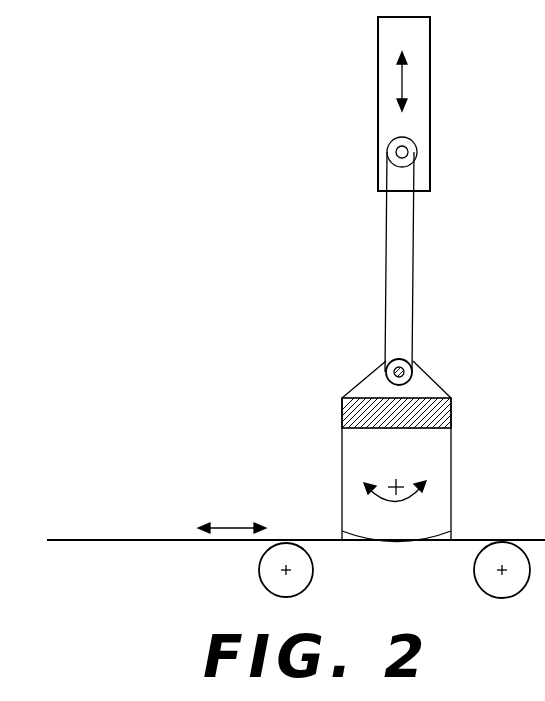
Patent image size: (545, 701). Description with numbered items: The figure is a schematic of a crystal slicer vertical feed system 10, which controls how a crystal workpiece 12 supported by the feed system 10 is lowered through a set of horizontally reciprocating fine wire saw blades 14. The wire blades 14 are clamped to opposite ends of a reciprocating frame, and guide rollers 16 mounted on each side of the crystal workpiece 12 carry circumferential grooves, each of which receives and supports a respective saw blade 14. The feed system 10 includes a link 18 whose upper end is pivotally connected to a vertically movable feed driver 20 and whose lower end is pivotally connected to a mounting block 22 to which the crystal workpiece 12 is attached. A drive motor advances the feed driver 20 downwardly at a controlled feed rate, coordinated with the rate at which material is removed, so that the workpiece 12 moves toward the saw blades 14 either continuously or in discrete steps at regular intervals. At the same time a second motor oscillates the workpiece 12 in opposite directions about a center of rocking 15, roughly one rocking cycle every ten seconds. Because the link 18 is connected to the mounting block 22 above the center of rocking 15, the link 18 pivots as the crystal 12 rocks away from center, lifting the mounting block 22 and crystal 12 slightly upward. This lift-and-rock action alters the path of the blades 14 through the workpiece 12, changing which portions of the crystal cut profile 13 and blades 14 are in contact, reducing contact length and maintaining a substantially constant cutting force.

The crystal slicer vertical feed system 10 is at (343, 186).
The crystal workpiece 12 is at (430, 452).
The crystal cut profile 13 is at (442, 532).
The fine wire saw blades 14 is at (130, 542).
The center of rocking 15 is at (393, 483).
The guide rollers 16 is at (268, 577).
The link 18 is at (405, 243).
The feed driver 20 is at (422, 38).
The mounting block 22 is at (452, 412).